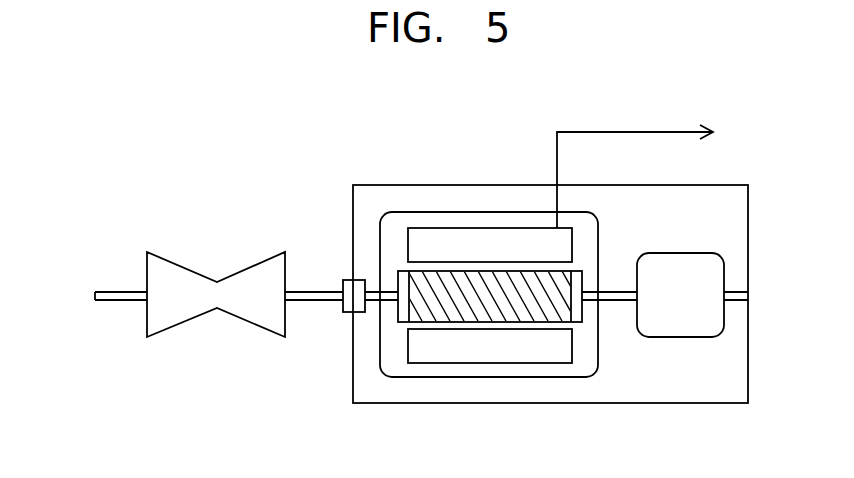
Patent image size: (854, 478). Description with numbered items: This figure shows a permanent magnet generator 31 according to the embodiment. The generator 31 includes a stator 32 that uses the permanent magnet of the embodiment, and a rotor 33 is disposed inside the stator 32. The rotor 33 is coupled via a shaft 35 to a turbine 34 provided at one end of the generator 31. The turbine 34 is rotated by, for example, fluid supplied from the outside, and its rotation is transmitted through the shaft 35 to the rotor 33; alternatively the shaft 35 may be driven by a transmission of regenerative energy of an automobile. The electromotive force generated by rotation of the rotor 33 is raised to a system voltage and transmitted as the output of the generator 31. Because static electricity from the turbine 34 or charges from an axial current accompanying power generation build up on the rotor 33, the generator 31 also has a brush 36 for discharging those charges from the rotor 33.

The generator 31 is at (397, 185).
The stator 32 is at (458, 353).
The rotor 33 is at (502, 311).
The turbine 34 is at (256, 262).
The shaft 35 is at (320, 302).
The brush 36 is at (683, 337).